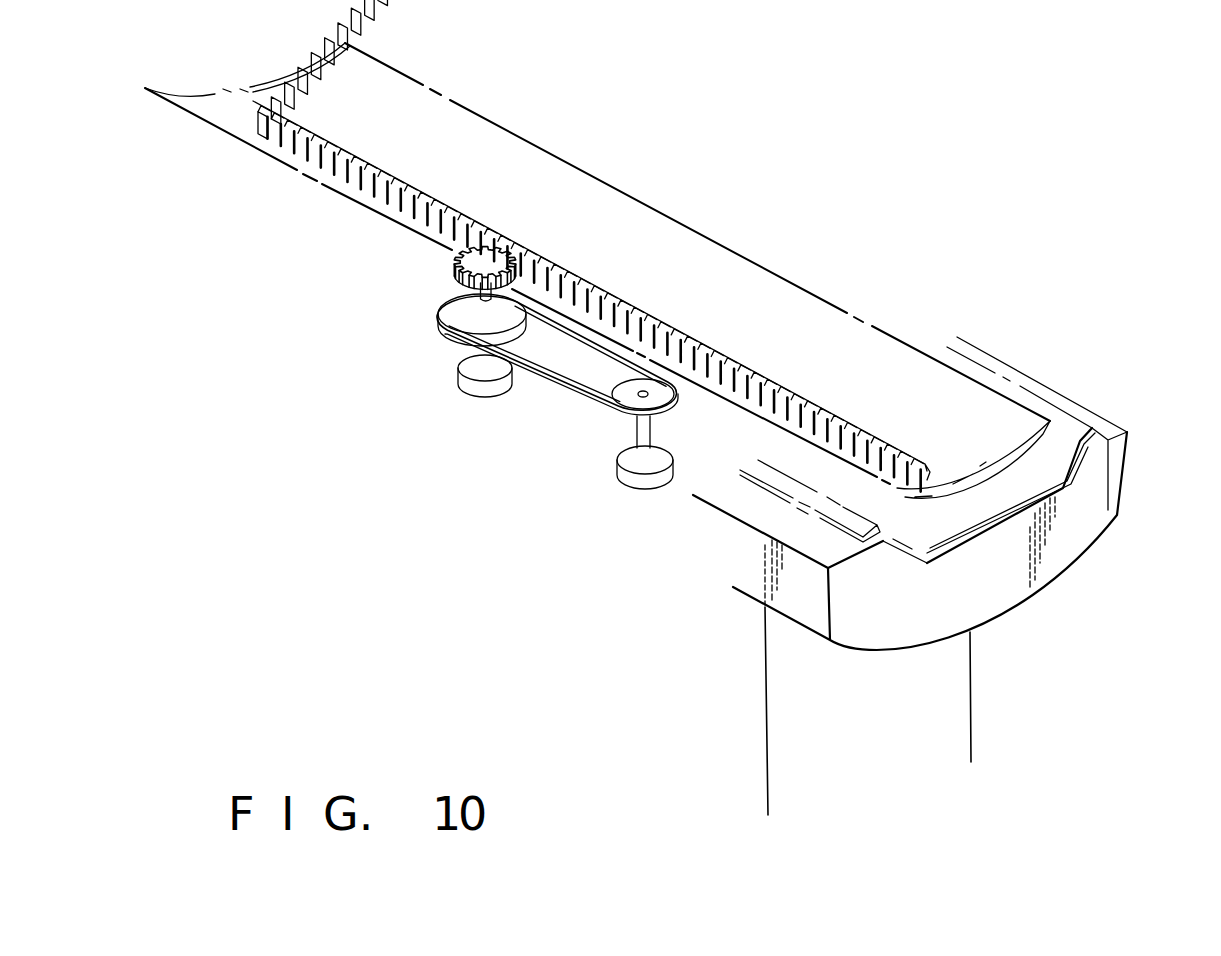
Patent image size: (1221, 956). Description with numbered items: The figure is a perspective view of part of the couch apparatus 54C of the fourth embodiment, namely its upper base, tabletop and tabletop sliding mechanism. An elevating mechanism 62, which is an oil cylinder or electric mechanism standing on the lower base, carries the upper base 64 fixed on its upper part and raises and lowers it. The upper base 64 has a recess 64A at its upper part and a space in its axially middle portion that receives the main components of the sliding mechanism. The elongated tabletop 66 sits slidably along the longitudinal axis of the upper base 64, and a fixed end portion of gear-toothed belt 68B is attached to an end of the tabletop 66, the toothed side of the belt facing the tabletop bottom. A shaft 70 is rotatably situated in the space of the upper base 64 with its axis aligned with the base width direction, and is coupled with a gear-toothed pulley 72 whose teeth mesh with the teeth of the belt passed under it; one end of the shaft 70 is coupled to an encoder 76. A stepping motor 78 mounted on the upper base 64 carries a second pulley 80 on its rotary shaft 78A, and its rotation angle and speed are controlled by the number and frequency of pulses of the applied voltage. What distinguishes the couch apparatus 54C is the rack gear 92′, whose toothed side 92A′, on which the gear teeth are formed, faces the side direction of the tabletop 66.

The couch apparatus 54C is at (928, 258).
The elevating mechanism 62 is at (745, 673).
The upper base 64 is at (1007, 583).
The recess 64A is at (1073, 493).
The tabletop 66 is at (866, 362).
The fixed end portion of gear-toothed belt 68B is at (1063, 450).
The shaft 70 is at (455, 300).
The gear-toothed pulley 72 is at (488, 250).
The encoder 76 is at (498, 388).
The stepping motor 78 is at (643, 475).
The rotary shaft 78A is at (648, 450).
The second pulley 80 is at (668, 400).
The rack gear 92′ is at (648, 313).
The toothed side of rack gear 92A′ is at (575, 280).